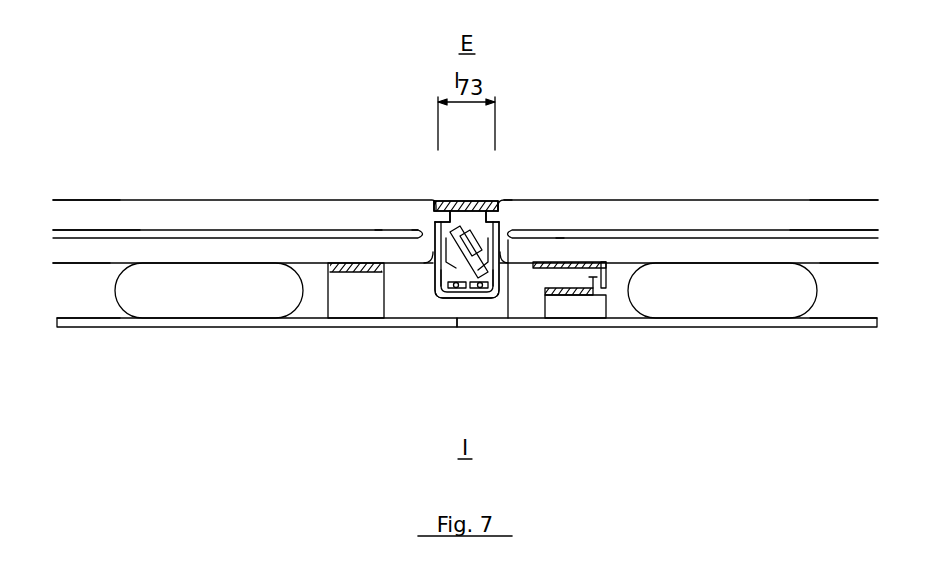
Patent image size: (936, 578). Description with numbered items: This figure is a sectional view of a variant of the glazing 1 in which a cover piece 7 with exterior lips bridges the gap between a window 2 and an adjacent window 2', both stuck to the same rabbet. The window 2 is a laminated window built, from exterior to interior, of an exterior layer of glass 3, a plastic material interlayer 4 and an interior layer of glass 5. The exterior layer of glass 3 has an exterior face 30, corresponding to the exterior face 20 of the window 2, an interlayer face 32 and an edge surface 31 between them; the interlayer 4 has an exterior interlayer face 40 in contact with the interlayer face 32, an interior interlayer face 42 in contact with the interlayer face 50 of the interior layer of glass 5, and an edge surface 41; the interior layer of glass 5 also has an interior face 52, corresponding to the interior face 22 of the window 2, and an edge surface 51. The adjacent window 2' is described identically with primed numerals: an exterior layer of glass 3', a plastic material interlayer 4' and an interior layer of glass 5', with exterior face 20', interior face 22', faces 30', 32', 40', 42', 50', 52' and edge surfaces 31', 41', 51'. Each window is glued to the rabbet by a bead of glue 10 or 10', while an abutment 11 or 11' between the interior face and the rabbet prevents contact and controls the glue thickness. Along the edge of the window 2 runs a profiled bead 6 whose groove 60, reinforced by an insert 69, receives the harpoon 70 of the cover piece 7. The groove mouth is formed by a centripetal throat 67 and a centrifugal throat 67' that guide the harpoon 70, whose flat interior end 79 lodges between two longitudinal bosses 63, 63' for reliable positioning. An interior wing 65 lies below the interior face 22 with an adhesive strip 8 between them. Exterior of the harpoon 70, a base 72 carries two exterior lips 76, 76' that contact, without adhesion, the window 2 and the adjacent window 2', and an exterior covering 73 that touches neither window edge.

The glazing 1 is at (420, 108).
The window 2 is at (667, 209).
The adjacent window 2' is at (257, 213).
The exterior layer of glass 3 is at (711, 196).
The exterior layer of glass 3' is at (223, 196).
The plastic material interlayer 4 is at (716, 231).
The plastic material interlayer 4' is at (215, 231).
The interior layer of glass 5 is at (712, 263).
The interior layer of glass 5' is at (221, 263).
The profiled bead 6 is at (467, 344).
The cover piece 7 is at (421, 164).
The adhesive strip 8 is at (597, 267).
The bead of glue 10 is at (722, 320).
The bead of glue 10' is at (209, 320).
The abutment 11 is at (575, 346).
The abutment 11' is at (345, 313).
The exterior face 20 is at (865, 166).
The exterior face 20' is at (82, 165).
The interior face 22 is at (872, 313).
The interior face 22' is at (76, 313).
The exterior face 30 is at (868, 166).
The exterior face 30' is at (50, 165).
The edge surface 31 is at (536, 173).
The edge surface 31' is at (367, 194).
The interlayer face 32 is at (831, 190).
The interlayer face 32' is at (122, 190).
The exterior interlayer face 40 is at (784, 190).
The exterior interlayer face 40' is at (135, 190).
The edge surface 41 is at (590, 202).
The edge surface 41' is at (329, 203).
The interior interlayer face 42 is at (843, 359).
The interior interlayer face 42' is at (96, 360).
The interlayer face 50 is at (825, 320).
The interlayer face 50' is at (81, 322).
The edge surface 51 is at (529, 307).
The edge surface 51' is at (414, 284).
The interior face 52 is at (875, 314).
The interior face 52' is at (43, 314).
The groove 60 is at (462, 302).
The longitudinal boss 63 is at (486, 326).
The longitudinal boss 63' is at (414, 336).
The interior wing 65 is at (594, 300).
The centripetal throat 67 is at (514, 327).
The centrifugal throat 67' is at (400, 313).
The insert 69 is at (462, 300).
The harpoon 70 is at (472, 205).
The base 72 is at (440, 205).
The exterior covering 73 is at (490, 205).
The exterior lip 76 is at (529, 159).
The exterior lip 76' is at (405, 181).
The flat interior end 79 is at (450, 302).